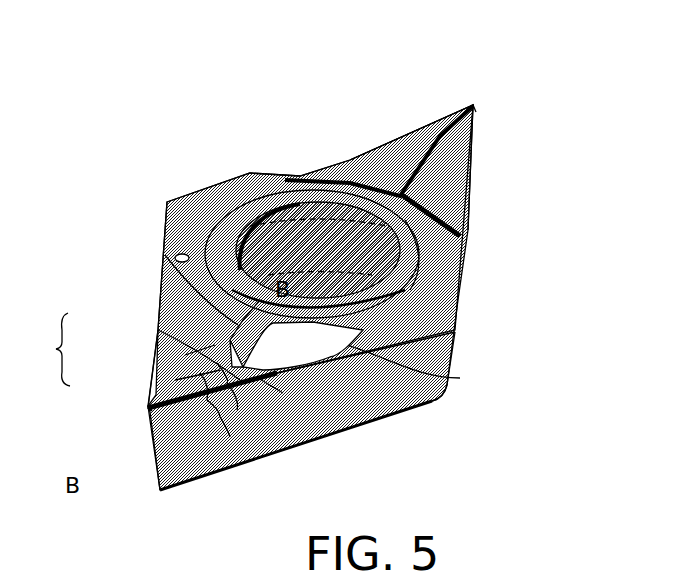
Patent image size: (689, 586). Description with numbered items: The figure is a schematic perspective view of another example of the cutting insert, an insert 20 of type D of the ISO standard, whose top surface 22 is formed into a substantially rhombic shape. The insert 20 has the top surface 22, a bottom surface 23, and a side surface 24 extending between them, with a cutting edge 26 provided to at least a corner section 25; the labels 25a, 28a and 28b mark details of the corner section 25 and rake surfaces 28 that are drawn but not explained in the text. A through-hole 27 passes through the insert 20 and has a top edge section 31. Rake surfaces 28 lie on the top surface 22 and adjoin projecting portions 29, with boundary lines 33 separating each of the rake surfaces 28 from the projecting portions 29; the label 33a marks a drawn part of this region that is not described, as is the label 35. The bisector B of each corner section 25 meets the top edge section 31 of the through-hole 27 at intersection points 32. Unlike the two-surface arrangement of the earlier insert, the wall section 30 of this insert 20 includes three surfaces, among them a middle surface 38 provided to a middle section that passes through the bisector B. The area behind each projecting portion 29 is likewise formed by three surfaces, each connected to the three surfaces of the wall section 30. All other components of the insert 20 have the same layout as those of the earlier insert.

The insert 20 is at (214, 140).
The top surface 22 is at (205, 203).
The bottom surface 23 is at (417, 406).
The side surface 24 is at (442, 343).
The corner section 25 is at (499, 123).
The corner cutting edge 25a is at (475, 100).
The cutting edge 26 is at (452, 110).
The through-hole 27 is at (312, 260).
The rake surface 28 is at (51, 349).
The chip breaker wall 28a is at (185, 362).
The chip breaker wall 28b is at (178, 380).
The projecting portion 29 is at (230, 437).
The wall section 30 is at (177, 307).
The top edge section 31 is at (420, 263).
The intersection point 32 is at (283, 393).
The boundary line 33 is at (237, 410).
The breaker bottom surface 33a is at (317, 437).
The protrusion 35 is at (182, 255).
The middle surface 38 is at (170, 260).